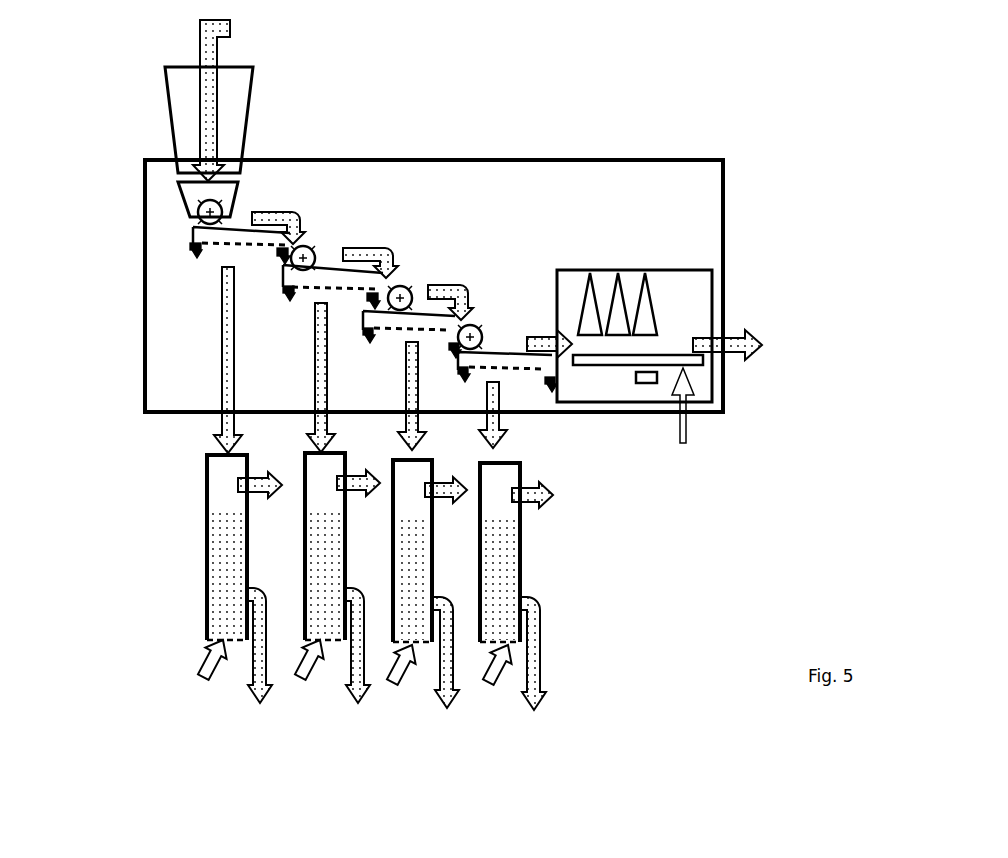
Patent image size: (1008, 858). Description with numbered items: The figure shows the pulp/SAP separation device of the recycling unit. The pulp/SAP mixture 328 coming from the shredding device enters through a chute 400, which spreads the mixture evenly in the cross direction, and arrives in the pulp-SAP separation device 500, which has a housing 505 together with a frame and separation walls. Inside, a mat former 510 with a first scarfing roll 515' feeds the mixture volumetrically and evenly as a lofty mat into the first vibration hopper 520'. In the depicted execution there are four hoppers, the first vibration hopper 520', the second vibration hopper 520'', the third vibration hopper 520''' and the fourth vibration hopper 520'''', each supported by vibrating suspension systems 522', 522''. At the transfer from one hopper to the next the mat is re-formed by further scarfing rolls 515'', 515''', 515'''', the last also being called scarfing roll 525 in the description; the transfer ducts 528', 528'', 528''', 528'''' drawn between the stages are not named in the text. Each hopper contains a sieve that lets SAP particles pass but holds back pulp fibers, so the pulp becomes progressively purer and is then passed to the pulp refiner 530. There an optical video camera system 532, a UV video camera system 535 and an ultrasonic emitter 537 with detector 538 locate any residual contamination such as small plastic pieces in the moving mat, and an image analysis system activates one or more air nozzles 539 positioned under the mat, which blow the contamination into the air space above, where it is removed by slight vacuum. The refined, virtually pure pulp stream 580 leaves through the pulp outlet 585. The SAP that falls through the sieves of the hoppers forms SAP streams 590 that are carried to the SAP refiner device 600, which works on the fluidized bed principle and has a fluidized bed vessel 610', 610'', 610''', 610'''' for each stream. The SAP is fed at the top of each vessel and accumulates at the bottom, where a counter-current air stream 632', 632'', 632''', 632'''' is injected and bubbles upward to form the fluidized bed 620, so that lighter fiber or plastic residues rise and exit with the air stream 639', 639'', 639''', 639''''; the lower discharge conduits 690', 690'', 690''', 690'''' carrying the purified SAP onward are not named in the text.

The pulp/SAP mixture 328 is at (198, 53).
The chute 400 is at (177, 96).
The pulp-SAP separation device 500 is at (435, 260).
The housing 505 is at (147, 388).
The mat former 510 is at (186, 198).
The first scarfing roll 515' is at (180, 229).
The scarfing roll 515'' is at (333, 204).
The scarfing roll 515''' is at (412, 229).
The scarfing roll 515'''' is at (507, 246).
The first vibration hopper 520' is at (193, 173).
The second vibration hopper 520'' is at (340, 184).
The third vibration hopper 520''' is at (426, 208).
The fourth vibration hopper 520'''' is at (524, 225).
The vibrating suspension system 522' is at (136, 244).
The vibrating suspension system 522'' is at (180, 268).
The scarfing roll 525 is at (253, 249).
The first transfer duct 528' is at (292, 162).
The second transfer duct 528'' is at (386, 179).
The third transfer duct 528''' is at (473, 200).
The fourth transfer duct 528'''' is at (570, 219).
The pulp refiner 530 is at (669, 284).
The optical video camera system 532 is at (590, 273).
The UV video camera system 535 is at (618, 273).
The ultrasonic emitter 537 is at (645, 273).
The ultrasonic detector 538 is at (643, 391).
The air nozzle 539 is at (688, 422).
The pulp stream 580 is at (745, 343).
The pulp outlet 585 is at (723, 330).
The SAP stream 590 is at (490, 400).
The SAP refiner device 600 is at (345, 606).
The fluidized bed vessel 610' is at (164, 547).
The fluidized bed vessel 610'' is at (213, 534).
The fluidized bed vessel 610''' is at (506, 539).
The fluidized bed vessel 610'''' is at (551, 552).
The fluidized bed 620 is at (237, 597).
The air stream 632' is at (213, 699).
The air stream 632'' is at (321, 699).
The air stream 632''' is at (419, 701).
The air stream 632'''' is at (516, 701).
The air stream 639' is at (271, 608).
The air stream 639'' is at (370, 607).
The air stream 639''' is at (463, 610).
The air stream 639'''' is at (567, 613).
The first discharge conduit 690' is at (259, 686).
The second discharge conduit 690'' is at (367, 686).
The third discharge conduit 690''' is at (466, 690).
The fourth discharge conduit 690'''' is at (569, 690).